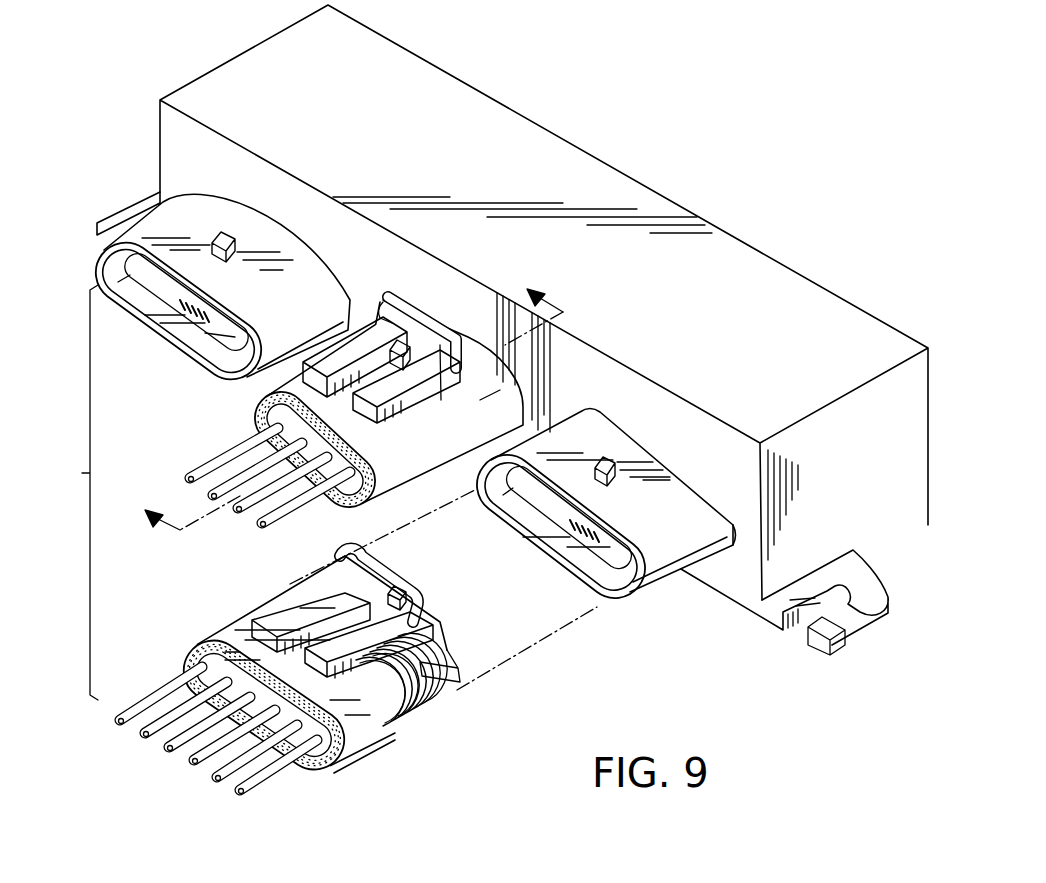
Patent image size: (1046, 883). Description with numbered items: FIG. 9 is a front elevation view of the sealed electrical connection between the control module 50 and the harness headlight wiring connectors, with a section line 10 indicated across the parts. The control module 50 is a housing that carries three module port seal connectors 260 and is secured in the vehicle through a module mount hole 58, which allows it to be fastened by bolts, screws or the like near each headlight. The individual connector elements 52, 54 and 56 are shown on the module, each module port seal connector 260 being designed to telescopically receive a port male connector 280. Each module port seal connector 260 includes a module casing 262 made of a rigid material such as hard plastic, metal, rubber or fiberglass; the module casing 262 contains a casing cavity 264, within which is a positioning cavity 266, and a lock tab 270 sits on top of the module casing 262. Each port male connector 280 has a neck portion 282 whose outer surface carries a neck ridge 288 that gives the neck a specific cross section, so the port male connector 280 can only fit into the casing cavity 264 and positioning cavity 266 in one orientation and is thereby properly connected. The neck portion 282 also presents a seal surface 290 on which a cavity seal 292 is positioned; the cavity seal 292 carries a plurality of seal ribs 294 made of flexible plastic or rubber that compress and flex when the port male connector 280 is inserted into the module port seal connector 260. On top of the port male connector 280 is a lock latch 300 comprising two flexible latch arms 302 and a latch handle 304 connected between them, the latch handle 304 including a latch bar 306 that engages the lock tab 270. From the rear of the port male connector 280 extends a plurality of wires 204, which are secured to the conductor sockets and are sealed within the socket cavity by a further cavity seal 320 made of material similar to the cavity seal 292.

The section line 10- 10 is at (358, 472).
The control module 50 is at (602, 169).
The first cover 52 is at (278, 211).
The second cover 54 is at (662, 430).
The connector assembly 56 is at (469, 299).
The module mount hole 58 is at (828, 612).
The wires 204 is at (205, 470).
The module port seal connector 260 is at (305, 268).
The module casing 262 is at (688, 482).
The casing cavity 264 is at (200, 334).
The positioning cavity 266 is at (571, 517).
The lock tab 270 is at (213, 243).
The port male connector 280 is at (238, 402).
The neck portion 282 is at (410, 648).
The neck ridge 288 is at (418, 658).
The seal surface 290 is at (365, 640).
The cavity seal 292 is at (400, 720).
The seal ribs 294 is at (407, 683).
The lock latch 300 is at (445, 302).
The flexible latch arms 302 is at (453, 667).
The latch handle 304 is at (394, 297).
The latch bar 306 is at (430, 348).
The cavity seal 320 is at (365, 487).